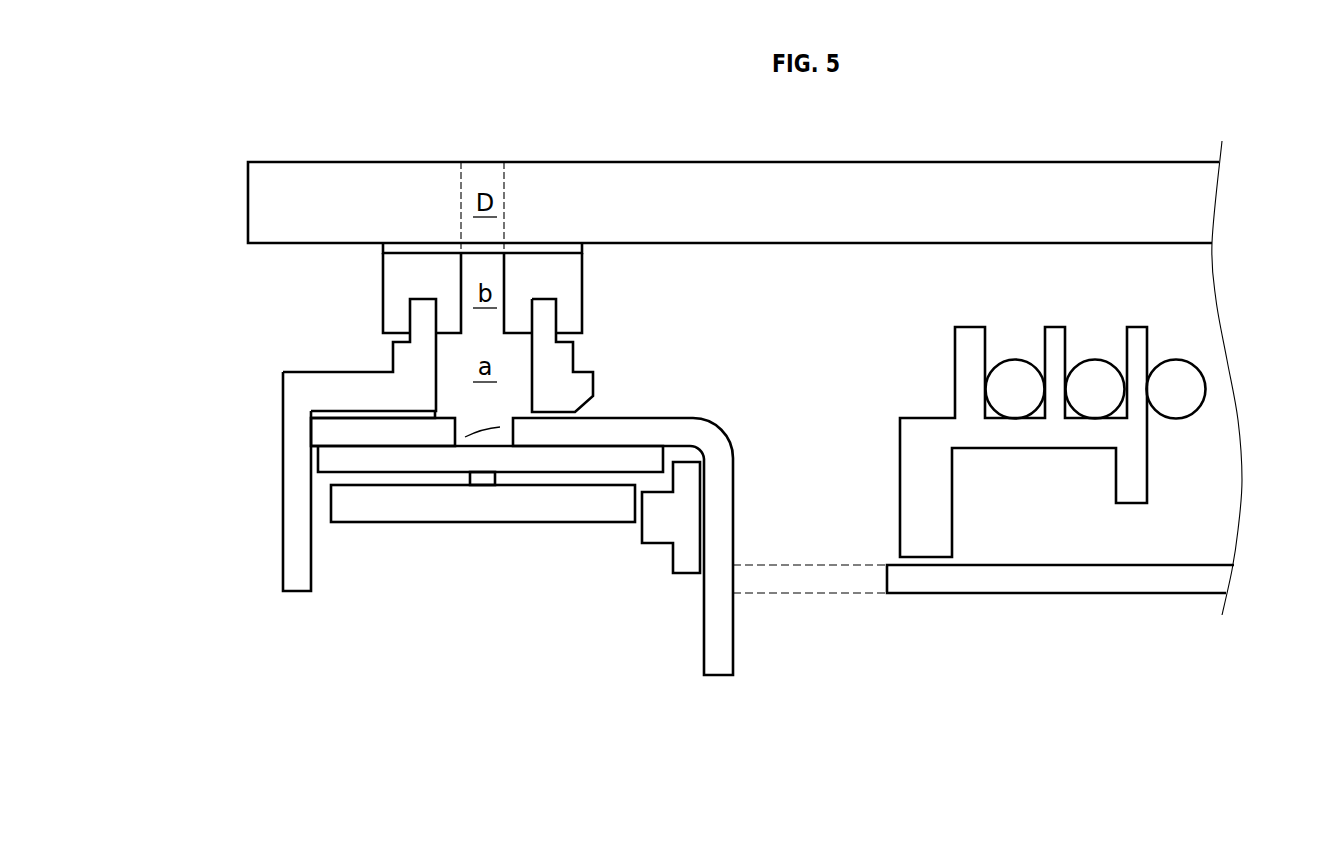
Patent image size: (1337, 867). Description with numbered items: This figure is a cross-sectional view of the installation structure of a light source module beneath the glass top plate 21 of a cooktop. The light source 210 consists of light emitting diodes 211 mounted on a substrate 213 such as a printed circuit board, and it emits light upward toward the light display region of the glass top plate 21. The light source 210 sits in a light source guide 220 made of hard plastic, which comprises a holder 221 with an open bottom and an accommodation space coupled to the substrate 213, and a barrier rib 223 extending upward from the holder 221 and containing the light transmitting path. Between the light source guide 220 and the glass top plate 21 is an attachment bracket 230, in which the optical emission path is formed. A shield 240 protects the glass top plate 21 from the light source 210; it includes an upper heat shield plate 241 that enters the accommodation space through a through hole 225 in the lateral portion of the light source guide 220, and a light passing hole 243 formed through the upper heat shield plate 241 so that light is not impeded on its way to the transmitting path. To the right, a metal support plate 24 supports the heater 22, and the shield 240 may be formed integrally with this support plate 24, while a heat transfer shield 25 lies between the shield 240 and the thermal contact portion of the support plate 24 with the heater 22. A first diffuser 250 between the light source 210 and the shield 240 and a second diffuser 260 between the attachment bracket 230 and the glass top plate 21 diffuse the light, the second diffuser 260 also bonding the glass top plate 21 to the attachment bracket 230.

The glass top plate 21 is at (292, 199).
The heater 22 is at (1177, 390).
The support plate 24 is at (1062, 580).
The heat transfer shield 25 is at (815, 577).
The light source 210 is at (393, 663).
The light emitting diodes 211 is at (480, 483).
The substrate 213 is at (368, 510).
The light source guide 220 is at (173, 355).
The holder 221 is at (292, 460).
The barrier rib 223 is at (398, 352).
The through hole 225 is at (552, 410).
The attachment bracket 230 is at (393, 292).
The shield 240 is at (525, 656).
The upper heat shield plate 241 is at (612, 433).
The light passing hole 243 is at (483, 431).
The first diffuser 250 is at (345, 461).
The second diffuser 260 is at (383, 245).